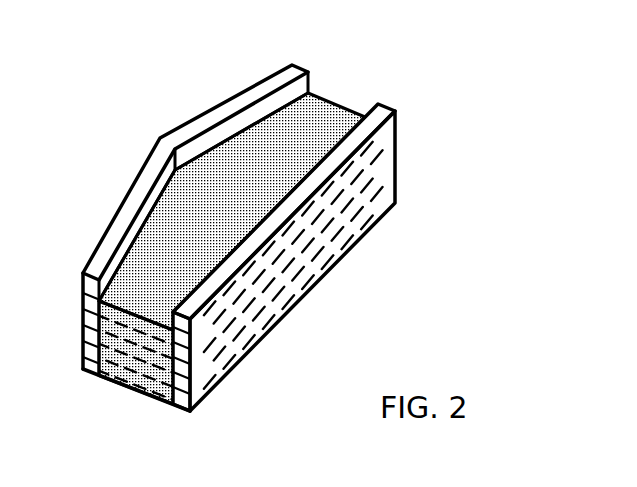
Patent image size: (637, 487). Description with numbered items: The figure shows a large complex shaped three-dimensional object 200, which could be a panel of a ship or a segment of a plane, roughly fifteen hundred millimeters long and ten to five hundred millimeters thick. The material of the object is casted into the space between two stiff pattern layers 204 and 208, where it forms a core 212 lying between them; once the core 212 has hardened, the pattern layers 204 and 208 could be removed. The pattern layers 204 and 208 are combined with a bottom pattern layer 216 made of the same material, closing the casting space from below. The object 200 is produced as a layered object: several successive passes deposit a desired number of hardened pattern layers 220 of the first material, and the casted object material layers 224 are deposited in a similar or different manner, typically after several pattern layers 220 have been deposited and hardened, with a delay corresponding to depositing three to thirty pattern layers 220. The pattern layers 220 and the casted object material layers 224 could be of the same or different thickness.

The complex shaped 3D object 200 is at (232, 72).
The pattern layer 204 is at (143, 171).
The pattern layer 208 is at (316, 247).
The core 212 is at (270, 188).
The bottom pattern layer 216 is at (102, 367).
The hardened pattern layers 220 is at (366, 214).
The casted object material layers 224 is at (160, 364).